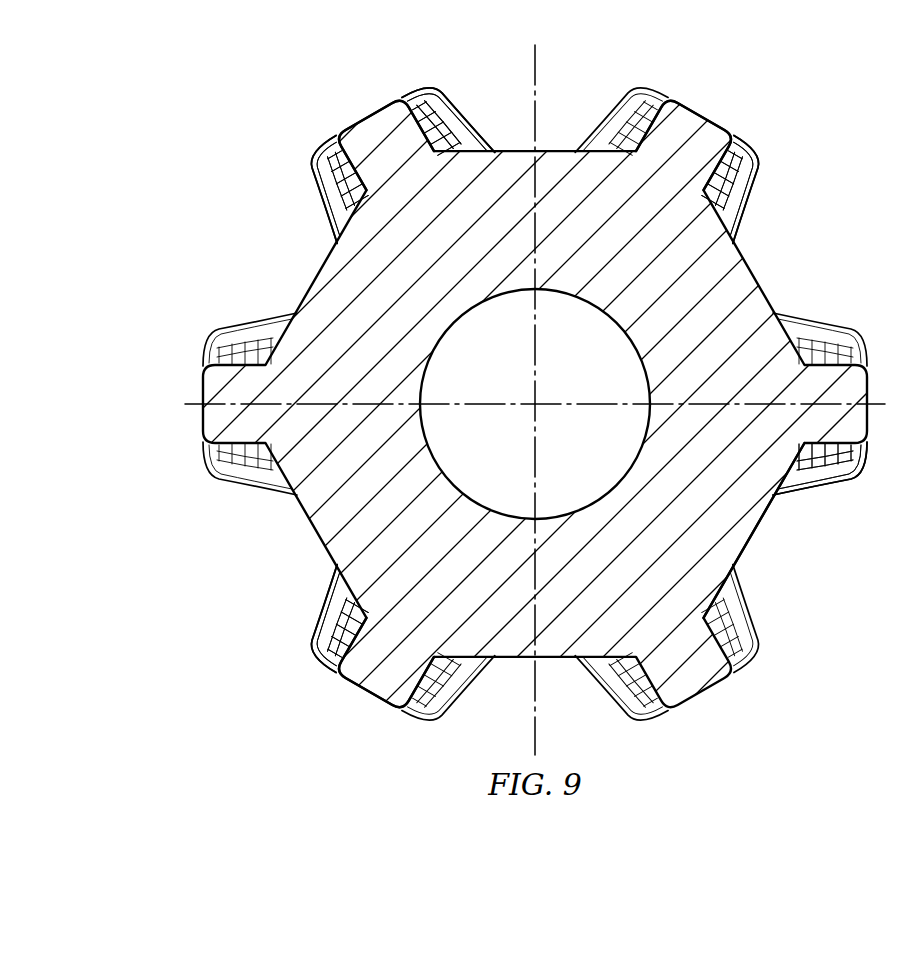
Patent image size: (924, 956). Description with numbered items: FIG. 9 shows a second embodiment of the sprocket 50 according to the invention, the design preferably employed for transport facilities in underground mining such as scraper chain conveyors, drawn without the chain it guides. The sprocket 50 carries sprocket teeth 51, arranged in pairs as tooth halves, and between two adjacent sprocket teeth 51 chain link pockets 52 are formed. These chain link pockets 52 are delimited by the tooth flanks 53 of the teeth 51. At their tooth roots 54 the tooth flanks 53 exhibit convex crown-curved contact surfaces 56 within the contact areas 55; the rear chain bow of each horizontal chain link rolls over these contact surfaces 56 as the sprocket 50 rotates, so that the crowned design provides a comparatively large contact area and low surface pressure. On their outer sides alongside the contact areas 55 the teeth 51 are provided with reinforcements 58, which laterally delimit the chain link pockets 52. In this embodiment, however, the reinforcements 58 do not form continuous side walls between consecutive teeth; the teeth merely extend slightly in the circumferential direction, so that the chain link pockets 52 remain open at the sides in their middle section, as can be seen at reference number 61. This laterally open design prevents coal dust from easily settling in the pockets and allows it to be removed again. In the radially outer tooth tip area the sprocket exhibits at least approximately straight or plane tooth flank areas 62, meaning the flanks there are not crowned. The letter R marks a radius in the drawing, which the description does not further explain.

The sprocket 50 is at (347, 288).
The sprocket teeth 51 is at (382, 130).
The chain link pockets 52 is at (556, 100).
The tooth flanks 53 is at (746, 155).
The tooth roots 54 is at (346, 678).
The contact areas 55 is at (243, 343).
The contact surfaces 56 is at (208, 462).
The reinforcements 58 is at (835, 486).
The laterally open section of chain link pocket 61 is at (767, 523).
The tooth flank areas 62 is at (444, 112).
The radius of rounded corner R is at (313, 160).